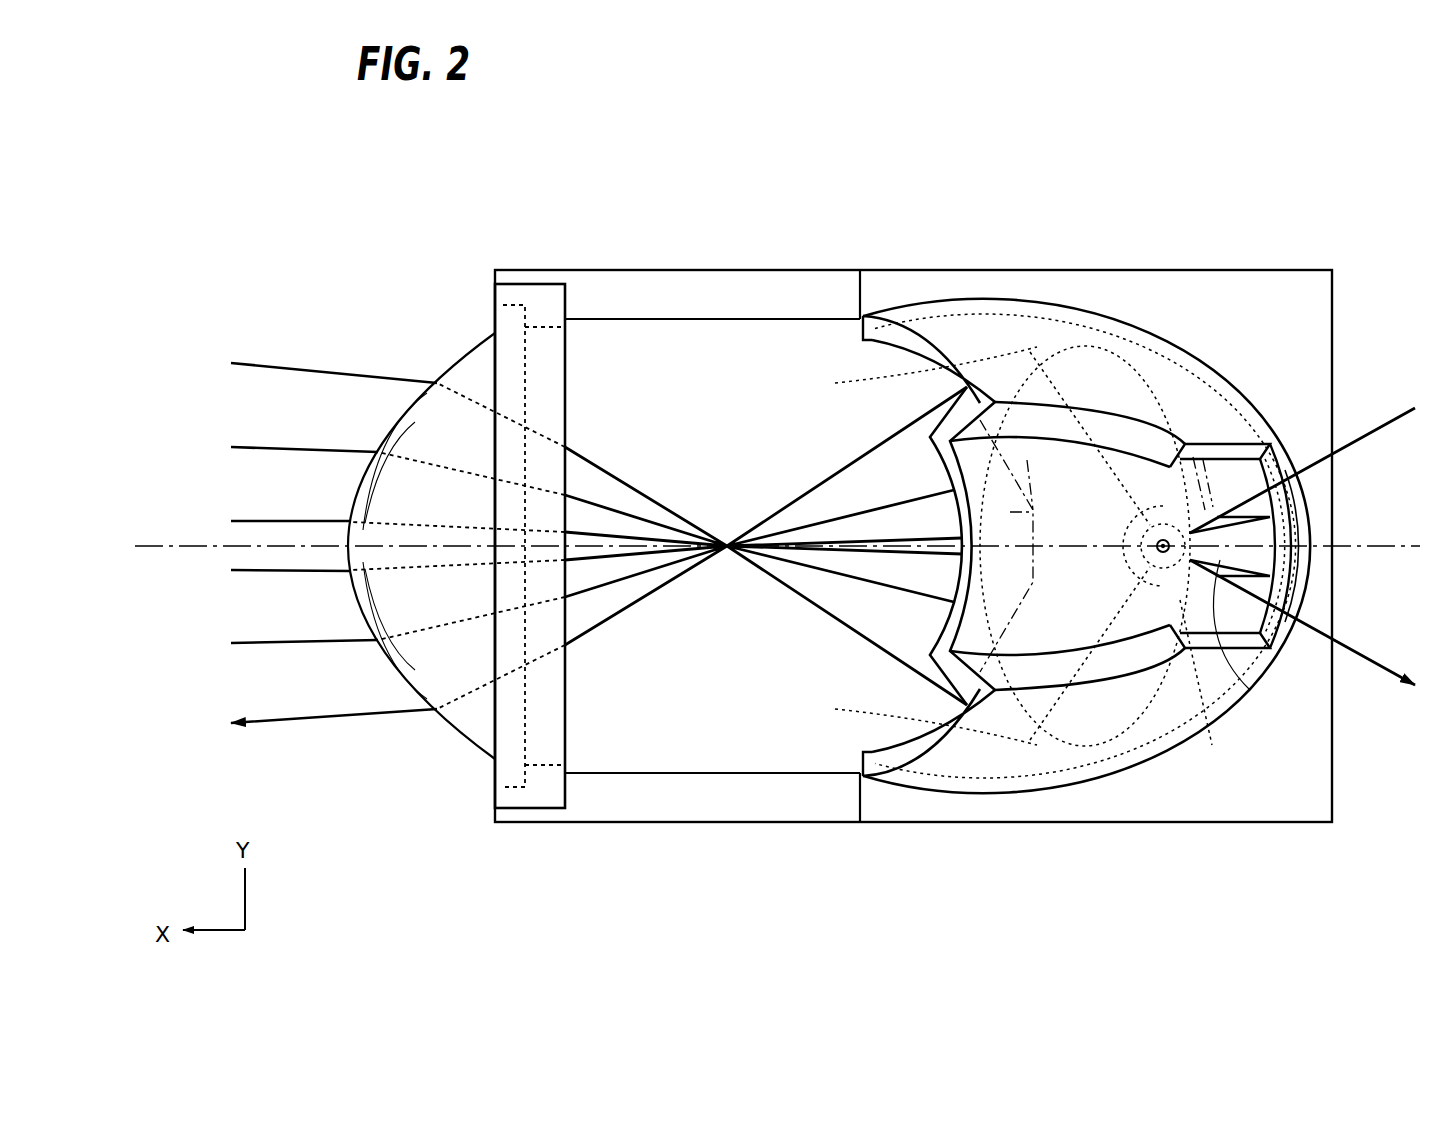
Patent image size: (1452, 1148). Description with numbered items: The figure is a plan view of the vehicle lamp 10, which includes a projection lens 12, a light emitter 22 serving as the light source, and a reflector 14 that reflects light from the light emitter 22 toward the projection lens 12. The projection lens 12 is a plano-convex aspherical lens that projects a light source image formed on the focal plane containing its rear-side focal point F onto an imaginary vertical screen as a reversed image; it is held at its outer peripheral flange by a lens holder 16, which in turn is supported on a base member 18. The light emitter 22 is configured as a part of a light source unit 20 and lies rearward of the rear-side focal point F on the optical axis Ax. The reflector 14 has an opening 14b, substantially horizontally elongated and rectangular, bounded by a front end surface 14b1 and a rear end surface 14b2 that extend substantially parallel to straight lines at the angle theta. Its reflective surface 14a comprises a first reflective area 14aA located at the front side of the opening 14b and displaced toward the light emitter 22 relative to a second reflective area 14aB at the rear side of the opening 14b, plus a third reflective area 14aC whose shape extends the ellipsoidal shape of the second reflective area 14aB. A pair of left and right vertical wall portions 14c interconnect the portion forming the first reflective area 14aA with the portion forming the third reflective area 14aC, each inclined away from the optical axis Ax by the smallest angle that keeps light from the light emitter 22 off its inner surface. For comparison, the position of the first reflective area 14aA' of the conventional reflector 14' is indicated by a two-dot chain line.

The vehicle lamp 10 is at (355, 212).
The projection lens 12 is at (437, 372).
The reflector 14 is at (1136, 546).
The reflector of the conventional vehicle lamp 14' is at (1013, 545).
The reflective surface 14a is at (1030, 352).
The first reflective area 14aA is at (869, 546).
The first reflective area of the conventional reflector 14aA' is at (1013, 546).
The second reflective area 14aB is at (1250, 690).
The third reflective area 14aC is at (981, 546).
The opening 14b is at (1245, 537).
The front end surface 14b1 is at (1232, 617).
The rear end surface 14b2 is at (1283, 580).
The vertical wall portion 14c is at (1093, 432).
The lens holder 16 is at (512, 283).
The base member 18 is at (1195, 826).
The light source unit 20 is at (1150, 498).
The light emitter 22 is at (1205, 486).
The rear-side focal point F is at (803, 546).
The optical axis Ax is at (217, 545).